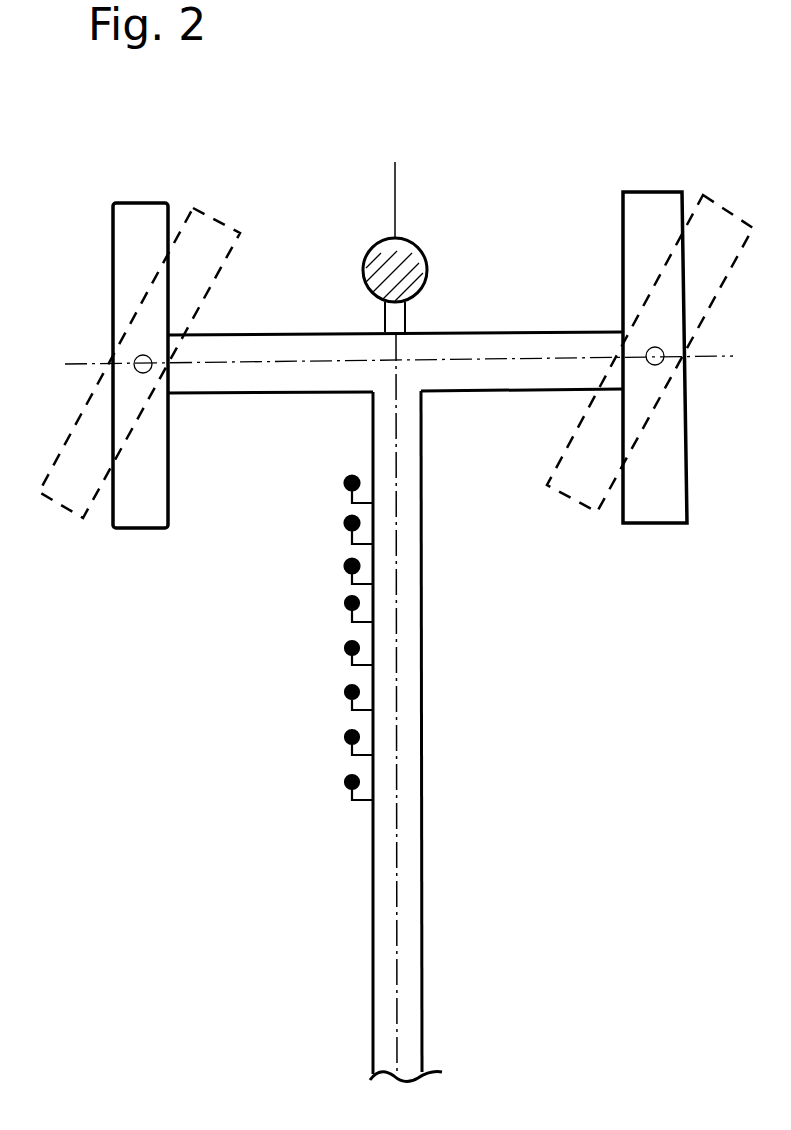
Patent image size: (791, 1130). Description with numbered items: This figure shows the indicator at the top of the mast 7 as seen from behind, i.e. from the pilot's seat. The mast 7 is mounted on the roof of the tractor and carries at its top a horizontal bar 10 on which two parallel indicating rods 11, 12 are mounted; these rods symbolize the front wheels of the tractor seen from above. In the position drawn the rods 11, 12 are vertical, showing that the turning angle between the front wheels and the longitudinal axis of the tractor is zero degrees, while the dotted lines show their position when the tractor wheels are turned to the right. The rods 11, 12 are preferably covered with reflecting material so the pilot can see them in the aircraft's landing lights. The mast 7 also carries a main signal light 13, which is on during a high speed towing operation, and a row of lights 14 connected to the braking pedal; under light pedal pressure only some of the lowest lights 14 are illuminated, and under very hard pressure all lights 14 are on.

The mast 7 is at (417, 823).
The horizontal bar 10 is at (485, 343).
The indicating rod 11 is at (113, 248).
The indicating rod 12 is at (627, 230).
The main signal light 13 is at (423, 247).
The row of lights 14 is at (345, 601).